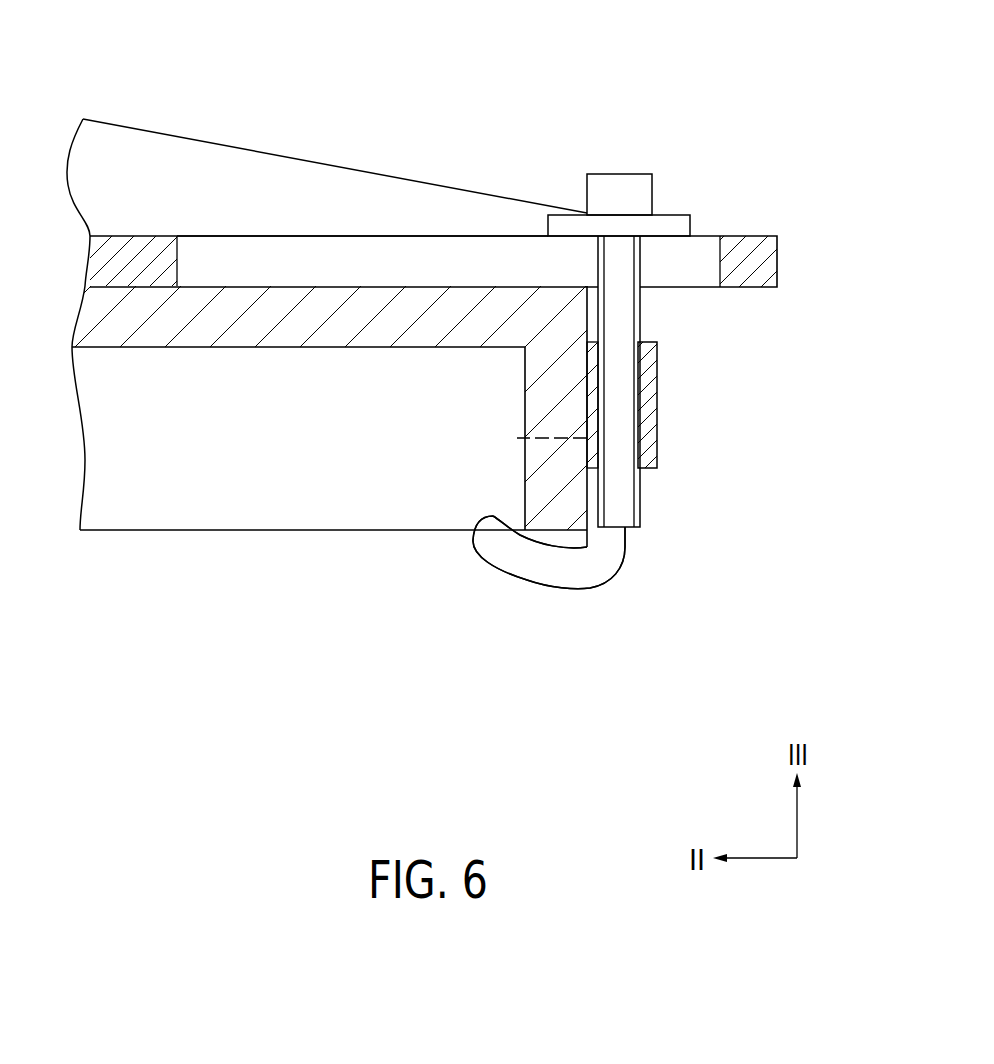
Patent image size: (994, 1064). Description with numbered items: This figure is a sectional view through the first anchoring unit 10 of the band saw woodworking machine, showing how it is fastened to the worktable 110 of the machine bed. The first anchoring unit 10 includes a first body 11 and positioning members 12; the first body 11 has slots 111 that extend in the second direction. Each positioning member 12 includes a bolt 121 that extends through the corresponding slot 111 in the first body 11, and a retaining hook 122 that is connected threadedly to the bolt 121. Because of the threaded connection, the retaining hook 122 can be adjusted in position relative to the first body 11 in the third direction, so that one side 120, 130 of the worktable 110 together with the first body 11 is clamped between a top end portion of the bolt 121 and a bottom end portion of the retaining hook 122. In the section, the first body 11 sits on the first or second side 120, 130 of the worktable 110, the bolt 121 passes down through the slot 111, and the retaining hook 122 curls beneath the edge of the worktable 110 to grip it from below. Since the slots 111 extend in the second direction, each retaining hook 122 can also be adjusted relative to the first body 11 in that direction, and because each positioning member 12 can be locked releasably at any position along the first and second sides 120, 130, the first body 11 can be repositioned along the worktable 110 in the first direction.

The first anchoring unit 10 is at (763, 222).
The first body 11 is at (770, 268).
The positioning member 12 is at (624, 170).
The worktable 110 is at (298, 322).
The slot 111 is at (438, 248).
The first side 120 is at (517, 438).
The second side 130 is at (549, 552).
The bolt 121 is at (622, 329).
The retaining hook 122 is at (657, 425).